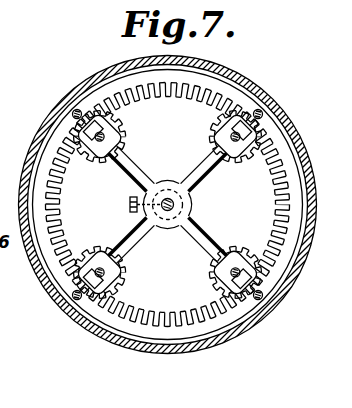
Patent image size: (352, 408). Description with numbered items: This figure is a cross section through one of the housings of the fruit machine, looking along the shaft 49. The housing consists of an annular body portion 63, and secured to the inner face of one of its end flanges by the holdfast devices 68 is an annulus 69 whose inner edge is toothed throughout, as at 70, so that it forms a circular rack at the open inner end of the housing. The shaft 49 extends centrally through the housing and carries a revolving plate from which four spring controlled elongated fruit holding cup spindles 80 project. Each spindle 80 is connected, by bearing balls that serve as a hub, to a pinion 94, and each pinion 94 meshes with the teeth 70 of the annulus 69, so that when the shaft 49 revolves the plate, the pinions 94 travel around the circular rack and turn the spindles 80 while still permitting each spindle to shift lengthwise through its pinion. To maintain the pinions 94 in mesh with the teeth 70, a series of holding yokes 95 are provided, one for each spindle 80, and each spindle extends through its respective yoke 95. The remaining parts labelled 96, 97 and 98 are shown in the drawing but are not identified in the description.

The shaft 49 is at (168, 219).
The annular body portion 63 is at (313, 226).
The holdfast devices 68 is at (66, 110).
The annulus 69 is at (144, 80).
The teeth 70 is at (188, 86).
The fruit holding cup spindle 80 is at (100, 160).
The pinion 94 is at (119, 124).
The holding yoke 95 is at (126, 137).
The spider arm 96 is at (142, 178).
The spider arm 97 is at (190, 208).
The key block 98 is at (131, 212).